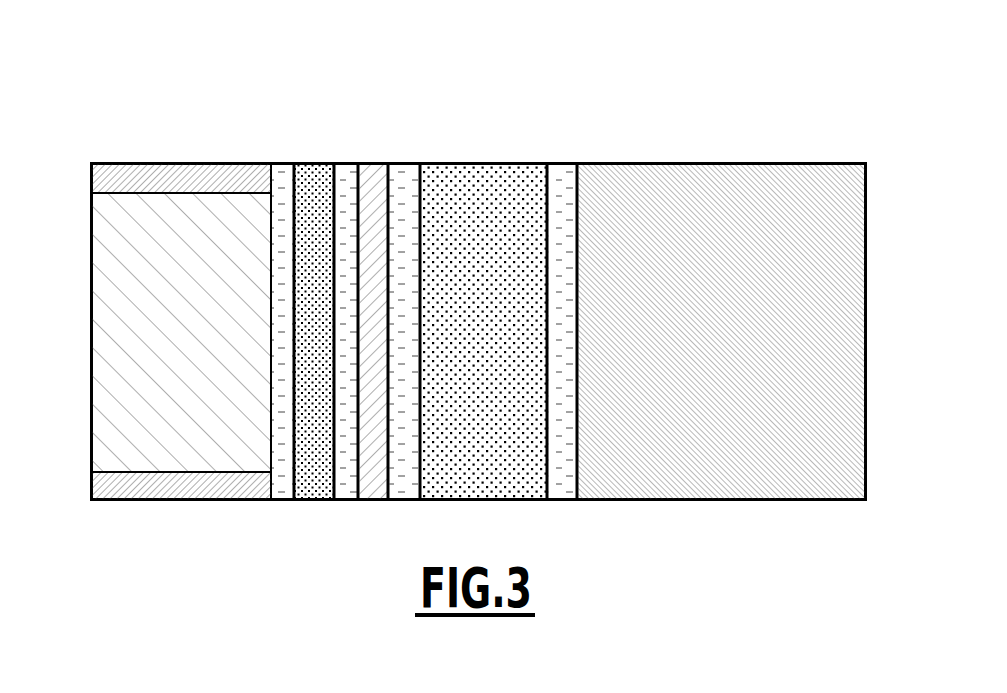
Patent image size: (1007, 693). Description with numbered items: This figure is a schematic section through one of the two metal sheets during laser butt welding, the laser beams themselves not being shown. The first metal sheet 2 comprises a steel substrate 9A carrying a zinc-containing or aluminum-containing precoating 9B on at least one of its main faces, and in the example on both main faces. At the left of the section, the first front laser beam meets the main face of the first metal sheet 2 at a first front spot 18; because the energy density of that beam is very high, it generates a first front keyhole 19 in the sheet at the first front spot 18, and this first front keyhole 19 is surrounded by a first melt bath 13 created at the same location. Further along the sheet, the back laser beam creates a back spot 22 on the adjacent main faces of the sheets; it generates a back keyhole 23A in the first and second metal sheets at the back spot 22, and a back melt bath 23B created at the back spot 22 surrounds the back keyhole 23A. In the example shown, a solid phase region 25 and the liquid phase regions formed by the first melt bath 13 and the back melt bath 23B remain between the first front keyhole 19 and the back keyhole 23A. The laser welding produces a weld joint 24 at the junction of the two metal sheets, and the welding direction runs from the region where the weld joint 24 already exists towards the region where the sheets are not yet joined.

The first metal sheet 2 is at (708, 97).
The steel substrate 9A is at (150, 336).
The precoating 9B is at (120, 140).
The first front spot 18 is at (262, 96).
The first front keyhole 19 is at (314, 198).
The first melt bath 13 is at (353, 152).
The solid phase region 25 is at (379, 180).
The back spot 22 is at (524, 277).
The back keyhole 23A is at (491, 212).
The back melt bath 23B is at (566, 208).
The weld joint 24 is at (744, 222).